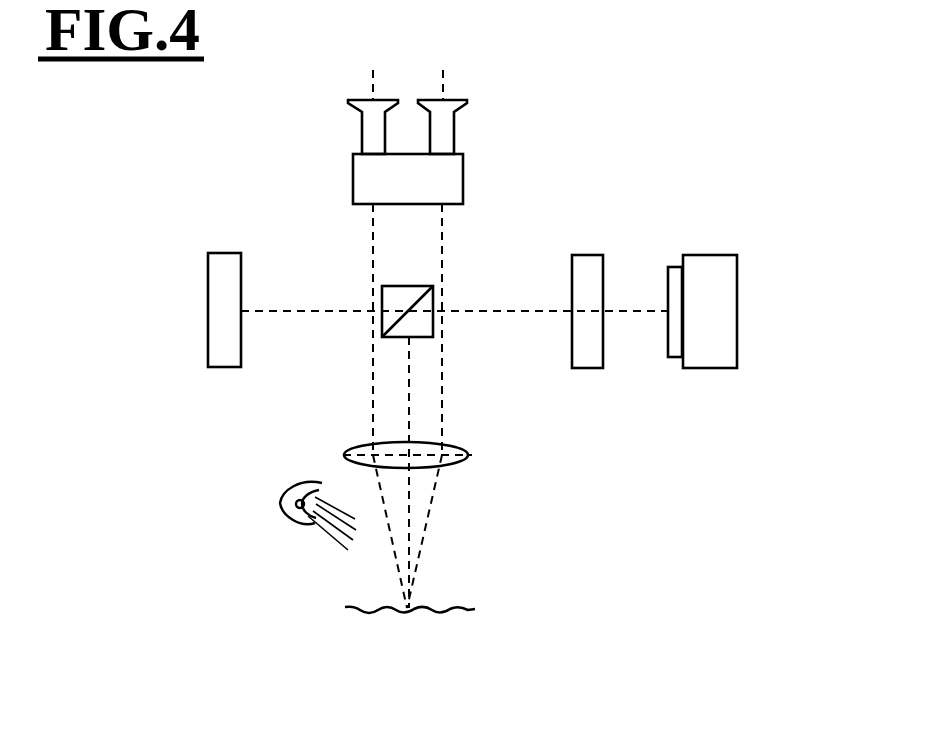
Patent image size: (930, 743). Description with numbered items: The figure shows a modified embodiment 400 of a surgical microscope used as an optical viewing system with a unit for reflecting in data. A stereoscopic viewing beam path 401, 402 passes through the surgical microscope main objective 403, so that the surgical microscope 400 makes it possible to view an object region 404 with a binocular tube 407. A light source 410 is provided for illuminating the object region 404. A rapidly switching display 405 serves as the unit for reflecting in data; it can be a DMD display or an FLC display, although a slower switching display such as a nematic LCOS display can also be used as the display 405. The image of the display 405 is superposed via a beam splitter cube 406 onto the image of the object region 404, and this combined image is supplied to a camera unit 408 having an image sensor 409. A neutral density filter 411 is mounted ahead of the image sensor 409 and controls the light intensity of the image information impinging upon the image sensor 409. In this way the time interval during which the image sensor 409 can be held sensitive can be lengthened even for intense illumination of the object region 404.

The modified embodiment 400 is at (612, 137).
The stereoscopic viewing beam path 401 is at (372, 377).
The stereoscopic viewing beam path 402 is at (442, 378).
The surgical microscope main objective 403 is at (455, 465).
The object region 404 is at (470, 612).
The rapidly switching display 405 is at (213, 270).
The beam splitter cube 406 is at (432, 303).
The binocular tube 407 is at (352, 173).
The camera unit 408 is at (727, 265).
The image sensor 409 is at (676, 355).
The light source 410 is at (282, 504).
The neutral density filter 411 is at (591, 258).